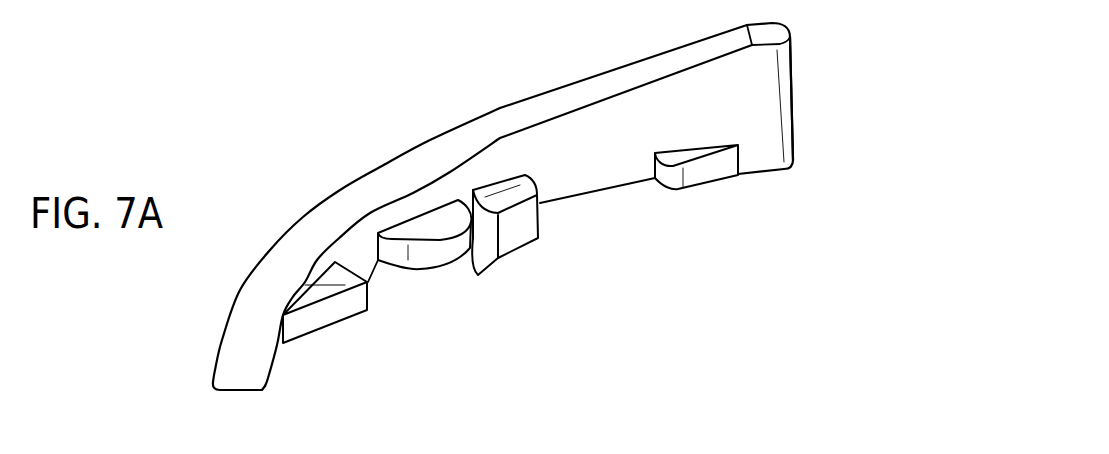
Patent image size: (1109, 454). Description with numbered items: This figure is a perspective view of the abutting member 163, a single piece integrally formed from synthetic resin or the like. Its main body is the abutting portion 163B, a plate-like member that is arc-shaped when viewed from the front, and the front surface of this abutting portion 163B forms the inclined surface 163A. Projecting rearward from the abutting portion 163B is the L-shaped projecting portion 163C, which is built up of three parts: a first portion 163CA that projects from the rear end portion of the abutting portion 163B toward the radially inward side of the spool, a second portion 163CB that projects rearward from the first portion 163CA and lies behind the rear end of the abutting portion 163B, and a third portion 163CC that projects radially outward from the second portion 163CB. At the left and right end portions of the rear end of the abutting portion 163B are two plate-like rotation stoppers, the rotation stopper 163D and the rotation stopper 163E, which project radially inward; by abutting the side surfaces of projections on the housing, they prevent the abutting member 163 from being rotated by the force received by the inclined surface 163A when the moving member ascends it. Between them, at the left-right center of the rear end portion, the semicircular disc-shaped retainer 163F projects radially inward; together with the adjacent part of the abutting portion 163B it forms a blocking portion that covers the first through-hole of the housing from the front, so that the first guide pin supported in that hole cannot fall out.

The abutting member 163 is at (400, 97).
The inclined surface 163A is at (570, 97).
The abutting portion 163B is at (760, 107).
The projecting portion 163C is at (572, 281).
The first portion 163CA is at (523, 212).
The second portion 163CB is at (505, 262).
The third portion 163CC is at (452, 265).
The rotation stopper 163D is at (325, 315).
The rotation stopper 163E is at (712, 173).
The retainer 163F is at (432, 253).